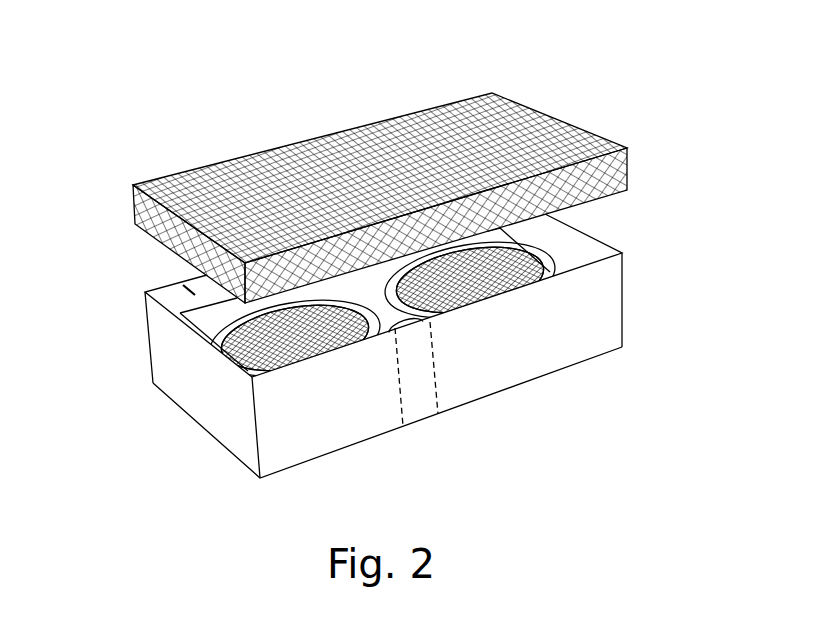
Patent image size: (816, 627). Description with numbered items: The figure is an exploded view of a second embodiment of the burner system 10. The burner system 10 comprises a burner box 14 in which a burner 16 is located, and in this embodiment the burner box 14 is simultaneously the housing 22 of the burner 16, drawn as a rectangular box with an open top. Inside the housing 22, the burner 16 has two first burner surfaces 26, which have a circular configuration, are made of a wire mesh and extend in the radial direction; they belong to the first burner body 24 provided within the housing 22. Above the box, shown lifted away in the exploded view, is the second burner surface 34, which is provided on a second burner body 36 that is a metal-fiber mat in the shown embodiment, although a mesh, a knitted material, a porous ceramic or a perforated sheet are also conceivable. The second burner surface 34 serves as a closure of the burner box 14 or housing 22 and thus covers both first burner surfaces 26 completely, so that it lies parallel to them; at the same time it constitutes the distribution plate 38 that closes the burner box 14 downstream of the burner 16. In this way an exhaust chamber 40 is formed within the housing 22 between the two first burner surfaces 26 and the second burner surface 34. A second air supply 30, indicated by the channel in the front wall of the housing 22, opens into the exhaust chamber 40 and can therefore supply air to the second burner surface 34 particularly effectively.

The burner system 10 is at (390, 280).
The burner box 14 is at (390, 361).
The burner 16 is at (390, 361).
The housing 22 is at (390, 361).
The first burner body 24 is at (413, 369).
The first burner surfaces 26 is at (305, 362).
The second air supply 30 is at (412, 332).
The second burner surface 34 is at (380, 177).
The second burner body 36 is at (380, 177).
The distribution plate 38 is at (370, 122).
The exhaust chamber 40 is at (178, 274).